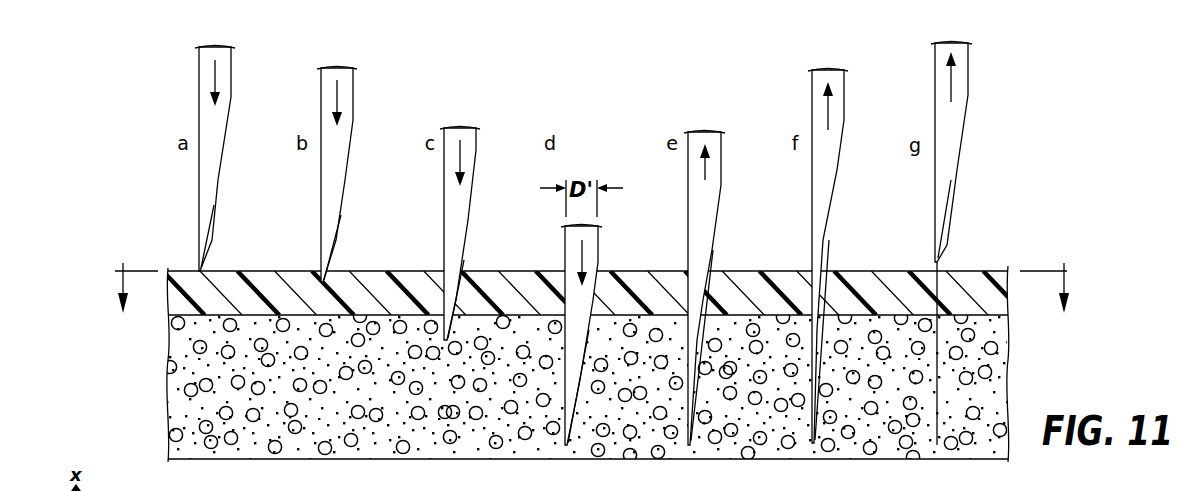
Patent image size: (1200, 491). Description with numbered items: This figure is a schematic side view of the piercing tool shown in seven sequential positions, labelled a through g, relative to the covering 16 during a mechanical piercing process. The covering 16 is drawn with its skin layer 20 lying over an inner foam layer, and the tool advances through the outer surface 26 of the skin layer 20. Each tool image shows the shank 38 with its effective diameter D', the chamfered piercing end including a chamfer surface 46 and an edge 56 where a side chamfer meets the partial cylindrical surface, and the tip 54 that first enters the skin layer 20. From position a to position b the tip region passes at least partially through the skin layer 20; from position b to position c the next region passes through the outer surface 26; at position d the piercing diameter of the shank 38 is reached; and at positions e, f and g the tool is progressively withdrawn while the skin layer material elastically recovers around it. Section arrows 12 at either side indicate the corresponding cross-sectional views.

The section line 12- 12 is at (598, 308).
The covering 16 is at (188, 346).
The skin layer 20 is at (241, 286).
The outer surface 26 is at (412, 268).
The shank 38 is at (574, 265).
The chamfer surface 46 is at (456, 301).
The tip 54 is at (203, 315).
The edge 56 is at (210, 208).